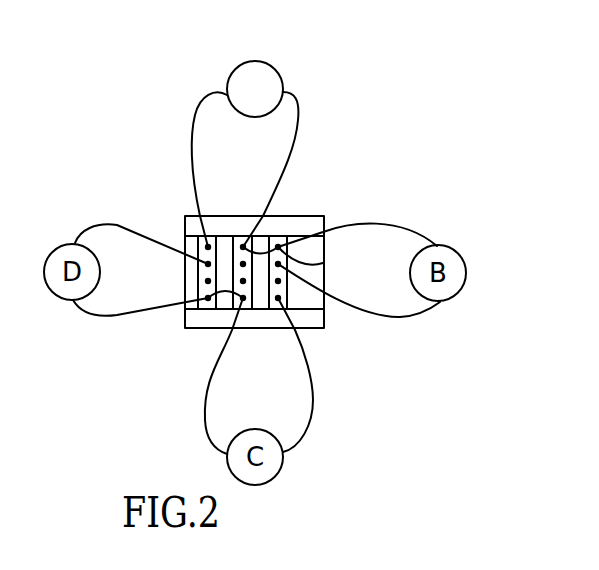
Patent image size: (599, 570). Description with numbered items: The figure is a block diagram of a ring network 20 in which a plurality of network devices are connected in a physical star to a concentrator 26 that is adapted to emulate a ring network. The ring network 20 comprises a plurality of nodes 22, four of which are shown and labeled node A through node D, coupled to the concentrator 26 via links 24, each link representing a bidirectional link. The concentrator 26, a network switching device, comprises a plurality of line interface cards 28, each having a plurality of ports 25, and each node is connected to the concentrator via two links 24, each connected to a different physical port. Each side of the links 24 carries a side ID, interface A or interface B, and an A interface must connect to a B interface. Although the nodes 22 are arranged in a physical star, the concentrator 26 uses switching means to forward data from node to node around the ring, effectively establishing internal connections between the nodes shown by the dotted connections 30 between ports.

The ring network 20 is at (97, 128).
The nodes 22 is at (272, 63).
The links 24 is at (187, 172).
The ports 25 is at (323, 263).
The concentrator 26 is at (313, 330).
The line interface cards 28 is at (208, 298).
The dotted connections 30 is at (224, 252).